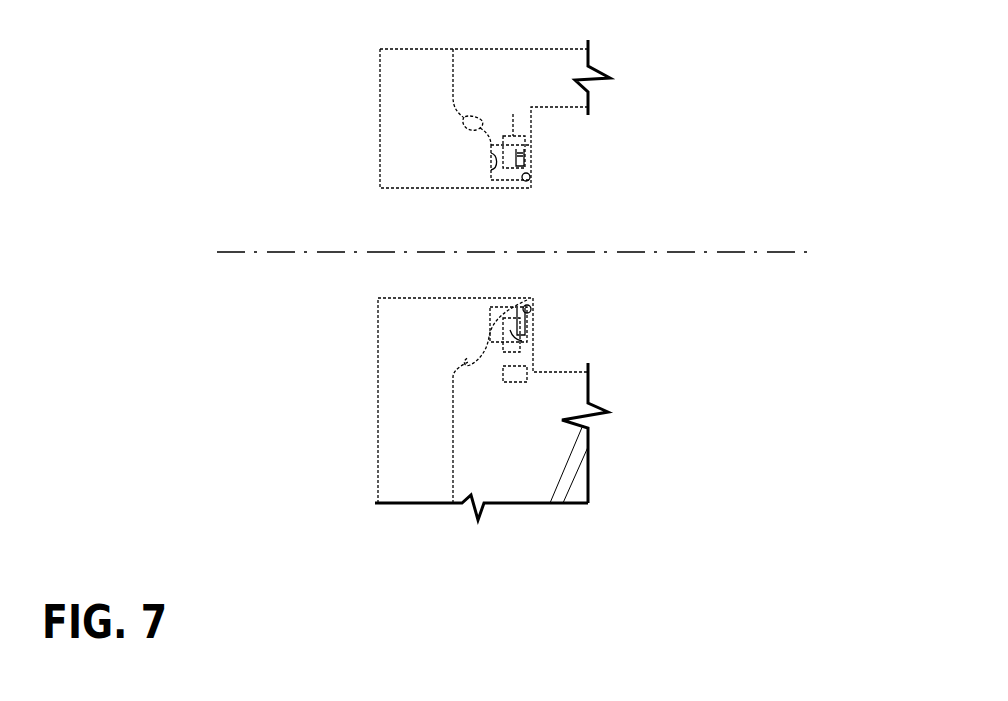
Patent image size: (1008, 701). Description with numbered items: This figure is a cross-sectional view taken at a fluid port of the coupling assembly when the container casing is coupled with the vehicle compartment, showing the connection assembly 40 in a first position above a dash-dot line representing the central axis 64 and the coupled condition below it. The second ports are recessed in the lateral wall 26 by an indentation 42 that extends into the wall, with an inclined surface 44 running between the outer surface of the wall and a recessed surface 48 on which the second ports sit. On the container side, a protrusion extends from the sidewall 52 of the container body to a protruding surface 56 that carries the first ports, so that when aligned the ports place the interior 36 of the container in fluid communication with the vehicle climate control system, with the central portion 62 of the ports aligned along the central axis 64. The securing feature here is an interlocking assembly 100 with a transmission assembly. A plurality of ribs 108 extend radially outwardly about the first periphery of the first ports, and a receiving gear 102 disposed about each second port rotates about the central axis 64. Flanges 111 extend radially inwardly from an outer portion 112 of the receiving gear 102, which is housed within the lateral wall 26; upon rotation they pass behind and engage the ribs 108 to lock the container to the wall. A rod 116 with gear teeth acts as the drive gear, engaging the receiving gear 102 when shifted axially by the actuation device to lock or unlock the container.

The lateral wall 26 is at (538, 463).
The interior 36 is at (253, 354).
The connection assembly 40 is at (452, 46).
The indentation 42 is at (455, 116).
The inclined surface 44 is at (487, 126).
The recessed surface 48 is at (527, 300).
The sidewall 52 is at (398, 403).
The protruding surface 56 is at (487, 157).
The central portion 62 is at (420, 219).
The central axis 64 is at (783, 252).
The interlocking assembly 100 is at (535, 199).
The receiving gear 102 is at (532, 333).
The ribs 108 is at (517, 153).
The flanges 111 is at (518, 165).
The outer portion 112 is at (514, 135).
The rod 116 is at (508, 383).